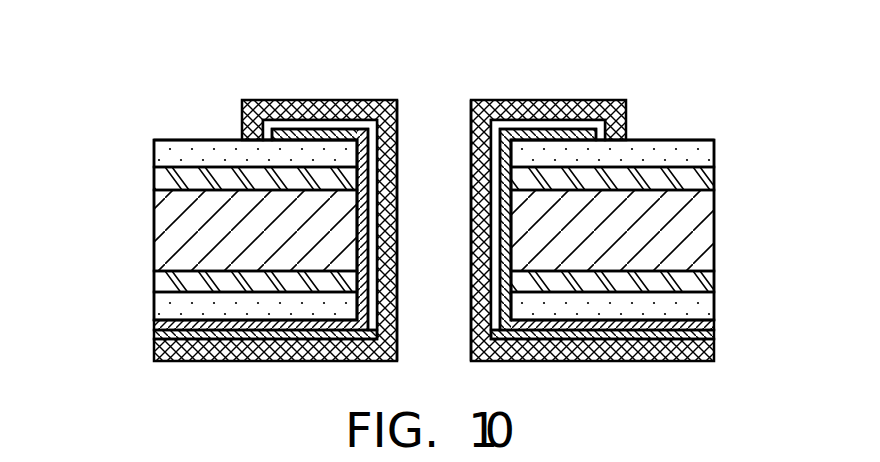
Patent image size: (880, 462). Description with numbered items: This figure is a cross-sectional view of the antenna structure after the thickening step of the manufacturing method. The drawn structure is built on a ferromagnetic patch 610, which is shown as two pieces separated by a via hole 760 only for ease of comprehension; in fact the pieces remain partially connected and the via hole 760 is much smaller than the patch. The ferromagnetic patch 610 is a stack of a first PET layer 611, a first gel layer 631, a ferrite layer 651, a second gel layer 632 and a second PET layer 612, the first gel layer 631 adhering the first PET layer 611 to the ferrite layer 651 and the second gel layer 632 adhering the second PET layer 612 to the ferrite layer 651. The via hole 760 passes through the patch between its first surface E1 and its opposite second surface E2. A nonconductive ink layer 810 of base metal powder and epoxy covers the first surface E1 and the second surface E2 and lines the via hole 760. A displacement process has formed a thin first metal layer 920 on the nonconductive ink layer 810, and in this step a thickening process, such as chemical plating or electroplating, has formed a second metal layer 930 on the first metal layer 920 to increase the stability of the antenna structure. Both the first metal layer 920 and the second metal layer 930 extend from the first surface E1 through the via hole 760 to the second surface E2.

The ferromagnetic patch 610 is at (148, 130).
The first PET layer 611 is at (155, 160).
The second PET layer 612 is at (167, 300).
The first gel layer 631 is at (155, 181).
The second gel layer 632 is at (155, 280).
The ferrite layer 651 is at (155, 229).
The via hole 760 is at (432, 130).
The nonconductive ink layer 810 is at (313, 101).
The first metal layer 920 is at (282, 101).
The second metal layer 930 is at (242, 112).
The first surface E1 is at (155, 150).
The second surface E2 is at (172, 316).